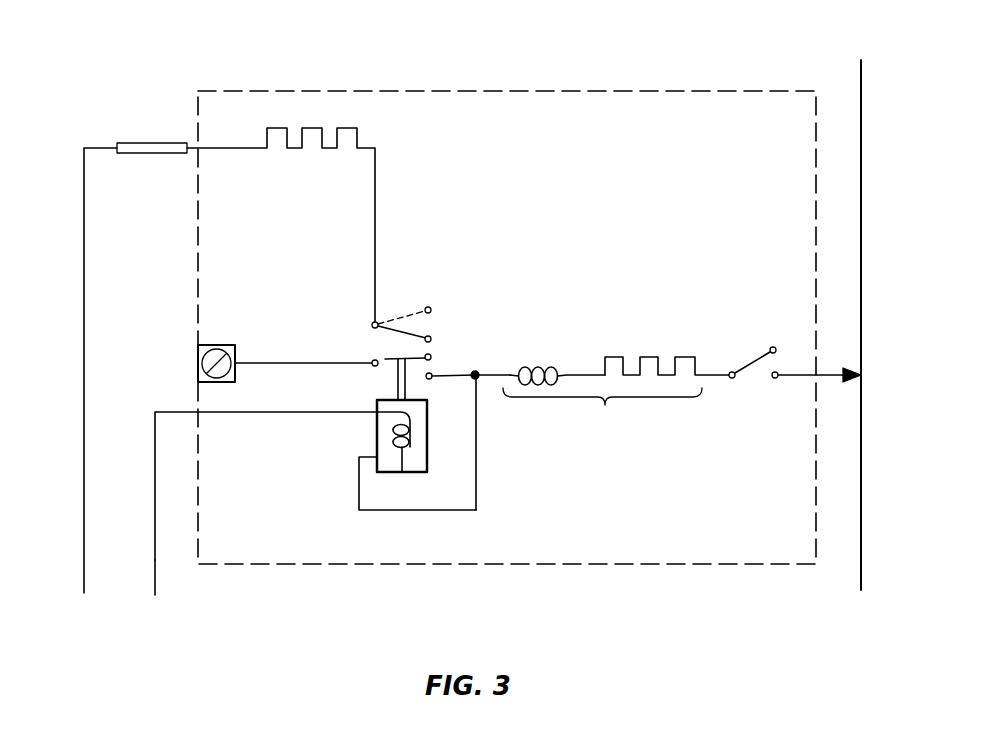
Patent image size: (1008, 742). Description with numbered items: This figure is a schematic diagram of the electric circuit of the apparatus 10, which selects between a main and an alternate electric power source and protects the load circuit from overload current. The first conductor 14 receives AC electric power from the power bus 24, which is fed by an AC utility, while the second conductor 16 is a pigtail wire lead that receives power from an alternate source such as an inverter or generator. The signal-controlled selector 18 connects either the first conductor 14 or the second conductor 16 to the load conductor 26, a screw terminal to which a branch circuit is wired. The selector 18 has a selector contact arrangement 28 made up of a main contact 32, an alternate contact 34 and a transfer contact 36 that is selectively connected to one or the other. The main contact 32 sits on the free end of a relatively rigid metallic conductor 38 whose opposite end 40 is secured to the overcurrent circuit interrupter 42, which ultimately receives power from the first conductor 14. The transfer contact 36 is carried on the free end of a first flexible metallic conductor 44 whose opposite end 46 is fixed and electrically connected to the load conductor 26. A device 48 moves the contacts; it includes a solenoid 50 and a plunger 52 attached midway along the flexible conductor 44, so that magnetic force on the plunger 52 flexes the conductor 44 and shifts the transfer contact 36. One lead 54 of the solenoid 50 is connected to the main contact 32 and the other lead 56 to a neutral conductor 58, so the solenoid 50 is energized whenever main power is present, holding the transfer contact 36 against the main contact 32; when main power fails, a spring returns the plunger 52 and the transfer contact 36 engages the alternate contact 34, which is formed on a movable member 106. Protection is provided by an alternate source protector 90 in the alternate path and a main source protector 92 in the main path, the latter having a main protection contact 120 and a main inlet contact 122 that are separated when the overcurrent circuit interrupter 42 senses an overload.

The apparatus 10 is at (609, 70).
The first conductor 14 is at (828, 371).
The second conductor 16 is at (102, 147).
The signal-controlled selector 18 is at (457, 438).
The power bus 24 is at (861, 194).
The load conductor 26 is at (198, 347).
The selector contact arrangement 28 is at (464, 308).
The main contact 32 is at (432, 373).
The alternate contact 34 is at (430, 337).
The transfer contact 36 is at (431, 354).
The metallic conductor 38 is at (457, 380).
The opposite end 40 is at (478, 373).
The overcurrent circuit interrupter 42 is at (602, 404).
The first flexible metallic conductor 44 is at (403, 357).
The opposite end 46 is at (372, 361).
The device 48 is at (447, 480).
The solenoid 50 is at (402, 472).
The plunger 52 is at (397, 384).
The lead 54 is at (477, 435).
The lead 56 is at (302, 414).
The neutral conductor 58 is at (155, 585).
The alternate source protector 90 is at (319, 114).
The main source protector 92 is at (656, 339).
The movable member 106 is at (407, 332).
The main protection contact 120 is at (775, 348).
The main inlet contact 122 is at (777, 378).